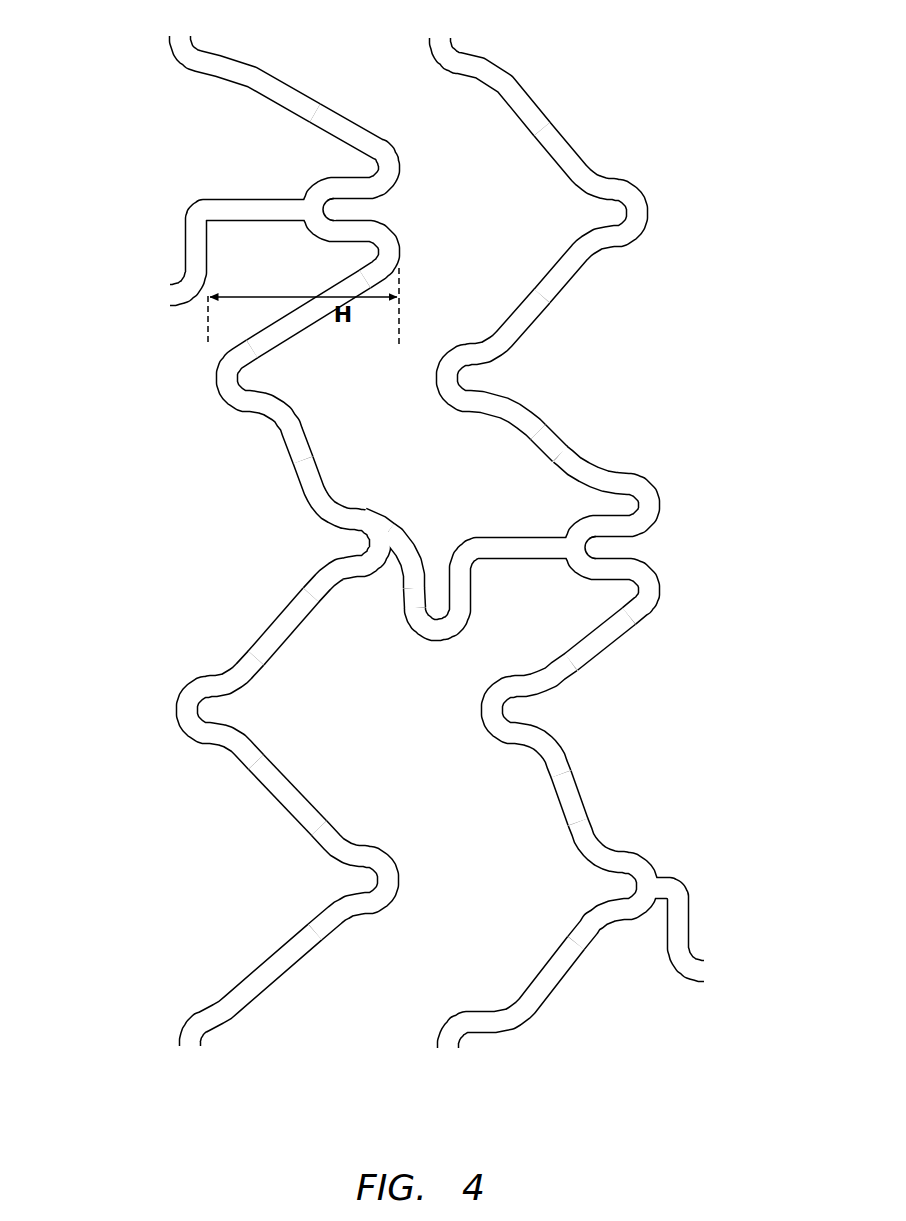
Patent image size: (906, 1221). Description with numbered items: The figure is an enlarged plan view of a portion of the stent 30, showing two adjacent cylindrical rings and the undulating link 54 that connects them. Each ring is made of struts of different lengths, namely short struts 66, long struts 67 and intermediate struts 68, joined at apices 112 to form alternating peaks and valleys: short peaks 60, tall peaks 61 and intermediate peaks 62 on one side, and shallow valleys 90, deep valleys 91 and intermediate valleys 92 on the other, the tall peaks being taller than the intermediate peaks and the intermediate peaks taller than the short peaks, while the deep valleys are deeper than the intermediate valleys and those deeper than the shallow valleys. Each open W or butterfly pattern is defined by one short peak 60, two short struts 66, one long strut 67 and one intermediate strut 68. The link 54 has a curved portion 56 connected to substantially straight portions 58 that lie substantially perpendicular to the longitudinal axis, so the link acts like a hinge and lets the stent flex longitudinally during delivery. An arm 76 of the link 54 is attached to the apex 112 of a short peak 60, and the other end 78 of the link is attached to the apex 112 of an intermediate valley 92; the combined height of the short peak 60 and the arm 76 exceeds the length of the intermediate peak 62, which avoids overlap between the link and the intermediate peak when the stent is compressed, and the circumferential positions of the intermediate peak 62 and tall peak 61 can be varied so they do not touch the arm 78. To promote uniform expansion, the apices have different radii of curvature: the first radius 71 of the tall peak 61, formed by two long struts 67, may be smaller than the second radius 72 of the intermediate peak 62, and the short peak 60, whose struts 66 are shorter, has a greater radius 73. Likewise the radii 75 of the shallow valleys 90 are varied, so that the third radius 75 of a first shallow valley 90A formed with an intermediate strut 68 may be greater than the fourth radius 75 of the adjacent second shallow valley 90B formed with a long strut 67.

The stent 30 is at (128, 893).
The link 54 is at (460, 546).
The curved portion 56 is at (439, 641).
The straight portions 58 is at (472, 589).
The short peak 60 is at (549, 362).
The tall peak 61 is at (453, 378).
The intermediate peak 62 is at (240, 351).
The short struts 66 is at (569, 529).
The long strut 67 is at (301, 608).
The intermediate strut 68 is at (553, 672).
The first radius 71 is at (238, 698).
The second radius 72 is at (277, 363).
The greater radius 73 is at (401, 210).
The radii of the shallow valleys 75 is at (322, 151).
The arm 76 is at (220, 198).
The other end of the link 78 is at (397, 527).
The shallow valleys 90 is at (380, 170).
The first shallow valley 90A is at (646, 592).
The second shallow valley 90B is at (646, 507).
The deep valleys 91 is at (362, 882).
The intermediate valley 92 is at (343, 542).
The apex 112 is at (272, 199).